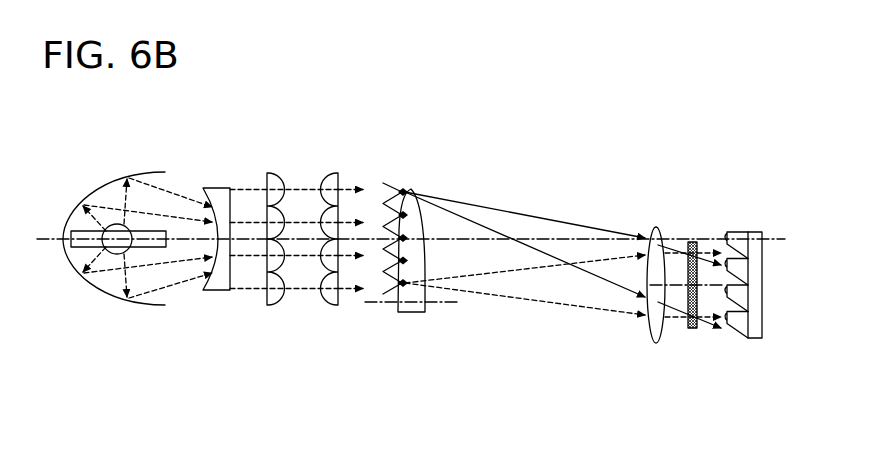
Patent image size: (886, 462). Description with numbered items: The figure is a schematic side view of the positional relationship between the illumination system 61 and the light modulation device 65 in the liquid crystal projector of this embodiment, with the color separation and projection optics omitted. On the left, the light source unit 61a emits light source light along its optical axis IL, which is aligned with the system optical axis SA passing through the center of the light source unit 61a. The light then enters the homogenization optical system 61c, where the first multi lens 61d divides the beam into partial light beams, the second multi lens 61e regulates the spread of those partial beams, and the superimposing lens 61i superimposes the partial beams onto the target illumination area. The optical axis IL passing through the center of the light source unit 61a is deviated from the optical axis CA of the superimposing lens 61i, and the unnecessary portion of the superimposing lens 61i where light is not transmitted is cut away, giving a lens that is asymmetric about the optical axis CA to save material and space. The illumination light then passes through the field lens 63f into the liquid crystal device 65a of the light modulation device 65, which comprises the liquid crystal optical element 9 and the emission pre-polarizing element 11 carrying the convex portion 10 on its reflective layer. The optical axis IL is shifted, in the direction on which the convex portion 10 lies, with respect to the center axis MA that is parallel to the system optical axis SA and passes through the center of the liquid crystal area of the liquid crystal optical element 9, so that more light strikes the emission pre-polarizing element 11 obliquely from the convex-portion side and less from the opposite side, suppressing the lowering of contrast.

The illumination system 61 is at (207, 152).
The light source unit 61a is at (105, 171).
The optical axis IL is at (54, 237).
The homogenization optical system 61c is at (327, 197).
The first multi lens 61d is at (270, 172).
The second multi lens 61e is at (328, 172).
The superimposing lens 61i is at (404, 215).
The system optical axis SA is at (463, 238).
The optical axis of the superimposing lens CA is at (440, 305).
The light modulation device 65 is at (695, 259).
The field lens 63f is at (648, 231).
The center axis MA is at (673, 283).
The liquid crystal device 65a is at (725, 303).
The liquid crystal optical element 9 is at (693, 330).
The convex portion 10 is at (733, 231).
The emission pre-polarizing element 11 is at (752, 308).